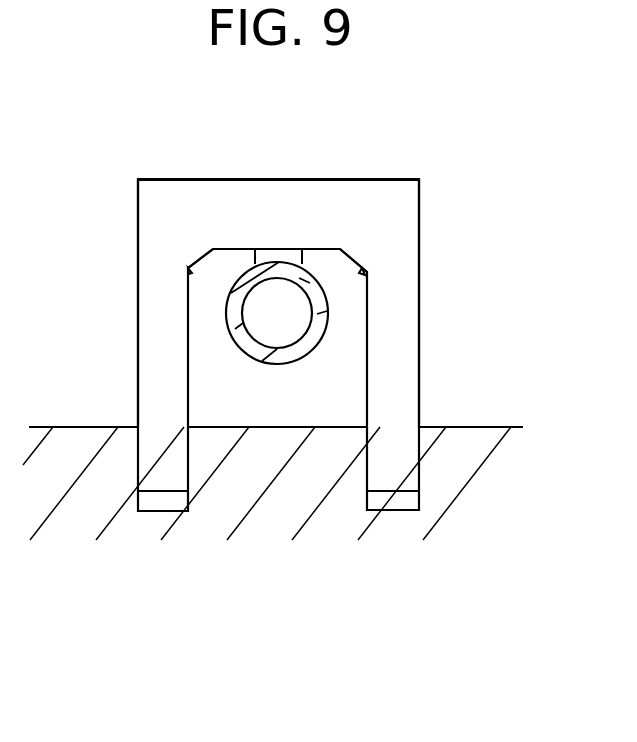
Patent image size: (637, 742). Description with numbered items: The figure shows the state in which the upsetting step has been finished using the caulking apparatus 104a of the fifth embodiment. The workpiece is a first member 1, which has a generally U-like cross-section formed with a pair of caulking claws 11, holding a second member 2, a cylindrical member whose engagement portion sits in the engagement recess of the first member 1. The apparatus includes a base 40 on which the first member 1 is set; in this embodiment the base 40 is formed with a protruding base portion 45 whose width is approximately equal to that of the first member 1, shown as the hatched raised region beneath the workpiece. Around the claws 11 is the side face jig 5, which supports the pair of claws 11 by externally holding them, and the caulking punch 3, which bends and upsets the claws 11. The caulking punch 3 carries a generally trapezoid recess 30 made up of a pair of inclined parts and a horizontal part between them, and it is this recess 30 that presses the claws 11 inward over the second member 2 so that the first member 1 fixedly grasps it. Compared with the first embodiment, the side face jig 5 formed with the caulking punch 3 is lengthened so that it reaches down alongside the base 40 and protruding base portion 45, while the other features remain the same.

The caulking apparatus 104a is at (431, 190).
The caulking punch 3 is at (277, 192).
The side face jig 5 is at (164, 345).
The first member 1 is at (323, 389).
The caulking claws 11 is at (217, 268).
The trapezoid recess 30 is at (321, 260).
The second member 2 is at (315, 325).
The base 40 is at (410, 522).
The protruding base portion 45 is at (271, 447).